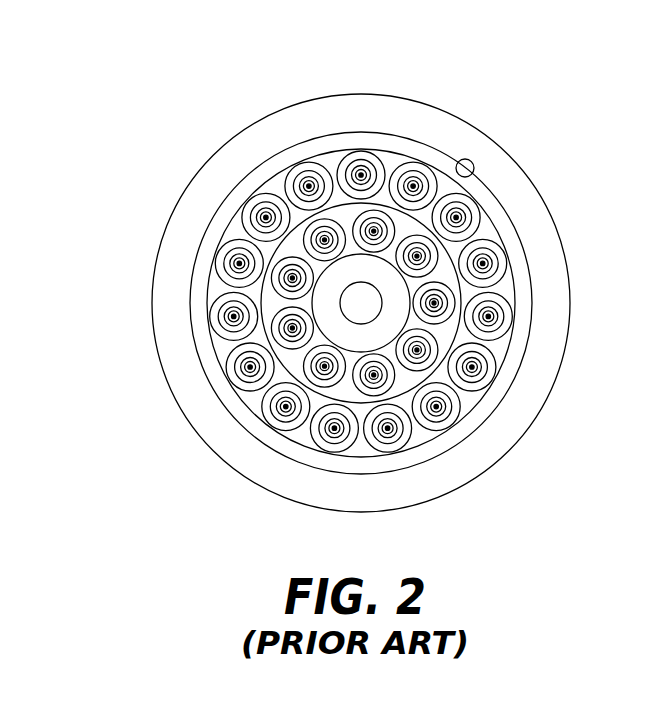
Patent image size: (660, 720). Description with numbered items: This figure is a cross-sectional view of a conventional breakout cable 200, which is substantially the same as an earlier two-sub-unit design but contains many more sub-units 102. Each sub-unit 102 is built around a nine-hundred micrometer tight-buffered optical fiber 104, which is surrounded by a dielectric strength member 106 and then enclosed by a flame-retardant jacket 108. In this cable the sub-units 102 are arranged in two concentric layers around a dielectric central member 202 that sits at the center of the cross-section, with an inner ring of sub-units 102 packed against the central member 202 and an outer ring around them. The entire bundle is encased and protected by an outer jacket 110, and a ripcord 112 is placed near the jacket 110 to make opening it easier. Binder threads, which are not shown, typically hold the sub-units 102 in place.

The breakout cable 200 is at (313, 47).
The outer jacket 110 is at (439, 116).
The ripcord 112 is at (468, 166).
The flame-retardant jacket 108 is at (487, 245).
The dielectric strength member 106 is at (488, 266).
The tight-buffered optical fiber 104 is at (489, 317).
The sub-unit 102 is at (355, 327).
The dielectric central member 202 is at (381, 340).